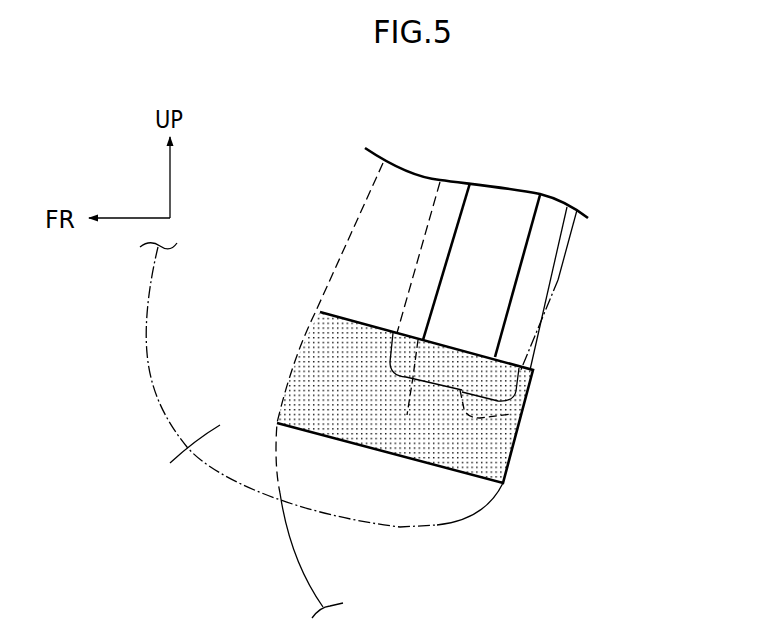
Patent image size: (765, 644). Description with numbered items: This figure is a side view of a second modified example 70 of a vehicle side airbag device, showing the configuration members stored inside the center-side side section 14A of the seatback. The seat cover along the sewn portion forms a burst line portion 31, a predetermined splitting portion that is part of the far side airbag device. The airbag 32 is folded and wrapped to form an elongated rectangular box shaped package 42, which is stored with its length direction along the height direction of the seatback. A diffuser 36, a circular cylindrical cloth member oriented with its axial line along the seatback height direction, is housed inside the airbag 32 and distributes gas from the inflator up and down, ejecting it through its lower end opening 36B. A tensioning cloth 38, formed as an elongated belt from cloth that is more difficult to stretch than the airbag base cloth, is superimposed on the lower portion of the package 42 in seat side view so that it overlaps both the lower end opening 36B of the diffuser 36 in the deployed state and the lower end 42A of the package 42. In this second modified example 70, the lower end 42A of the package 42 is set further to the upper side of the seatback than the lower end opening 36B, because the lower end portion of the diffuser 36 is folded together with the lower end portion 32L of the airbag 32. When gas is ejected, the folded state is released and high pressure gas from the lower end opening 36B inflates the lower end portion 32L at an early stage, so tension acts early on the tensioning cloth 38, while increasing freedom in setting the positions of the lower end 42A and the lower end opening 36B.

The second modified example 70 is at (292, 246).
The burst line portion 31 is at (358, 214).
The diffuser 36 is at (532, 233).
The package 42 is at (549, 289).
The airbag 32 is at (145, 325).
The lower end portion of the airbag 32L is at (170, 463).
The center-side side support section 14A is at (280, 532).
The tensioning cloth 38 is at (338, 443).
The lower end of the package 42A is at (512, 414).
The lower end opening of the diffuser 36B is at (407, 415).